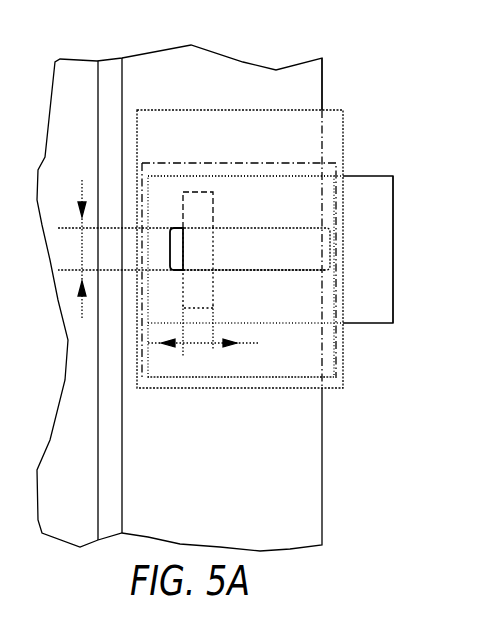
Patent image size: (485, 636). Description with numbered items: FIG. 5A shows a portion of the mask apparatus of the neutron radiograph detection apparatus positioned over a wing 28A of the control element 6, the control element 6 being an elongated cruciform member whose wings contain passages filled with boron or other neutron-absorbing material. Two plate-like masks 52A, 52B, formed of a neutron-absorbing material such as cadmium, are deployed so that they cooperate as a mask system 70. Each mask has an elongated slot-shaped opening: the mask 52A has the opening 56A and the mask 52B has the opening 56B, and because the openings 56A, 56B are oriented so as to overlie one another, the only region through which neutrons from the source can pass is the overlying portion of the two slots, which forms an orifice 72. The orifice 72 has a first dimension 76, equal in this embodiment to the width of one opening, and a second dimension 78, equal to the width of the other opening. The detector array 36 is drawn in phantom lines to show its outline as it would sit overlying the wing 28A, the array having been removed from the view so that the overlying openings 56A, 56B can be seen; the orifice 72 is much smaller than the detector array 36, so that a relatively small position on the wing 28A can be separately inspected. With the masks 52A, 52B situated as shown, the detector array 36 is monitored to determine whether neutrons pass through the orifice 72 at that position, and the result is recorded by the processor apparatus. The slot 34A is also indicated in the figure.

The control element 6 is at (122, 60).
The wing 28A is at (323, 64).
The mask 52B is at (345, 125).
The mask system 70 is at (378, 176).
The mask 52A is at (394, 215).
The aperture 34A is at (198, 242).
The opening 56A is at (220, 238).
The opening 56B is at (253, 269).
The orifice 72 is at (200, 266).
The first dimension 76 is at (196, 345).
The detector array 36 is at (292, 380).
The second dimension 78 is at (82, 247).